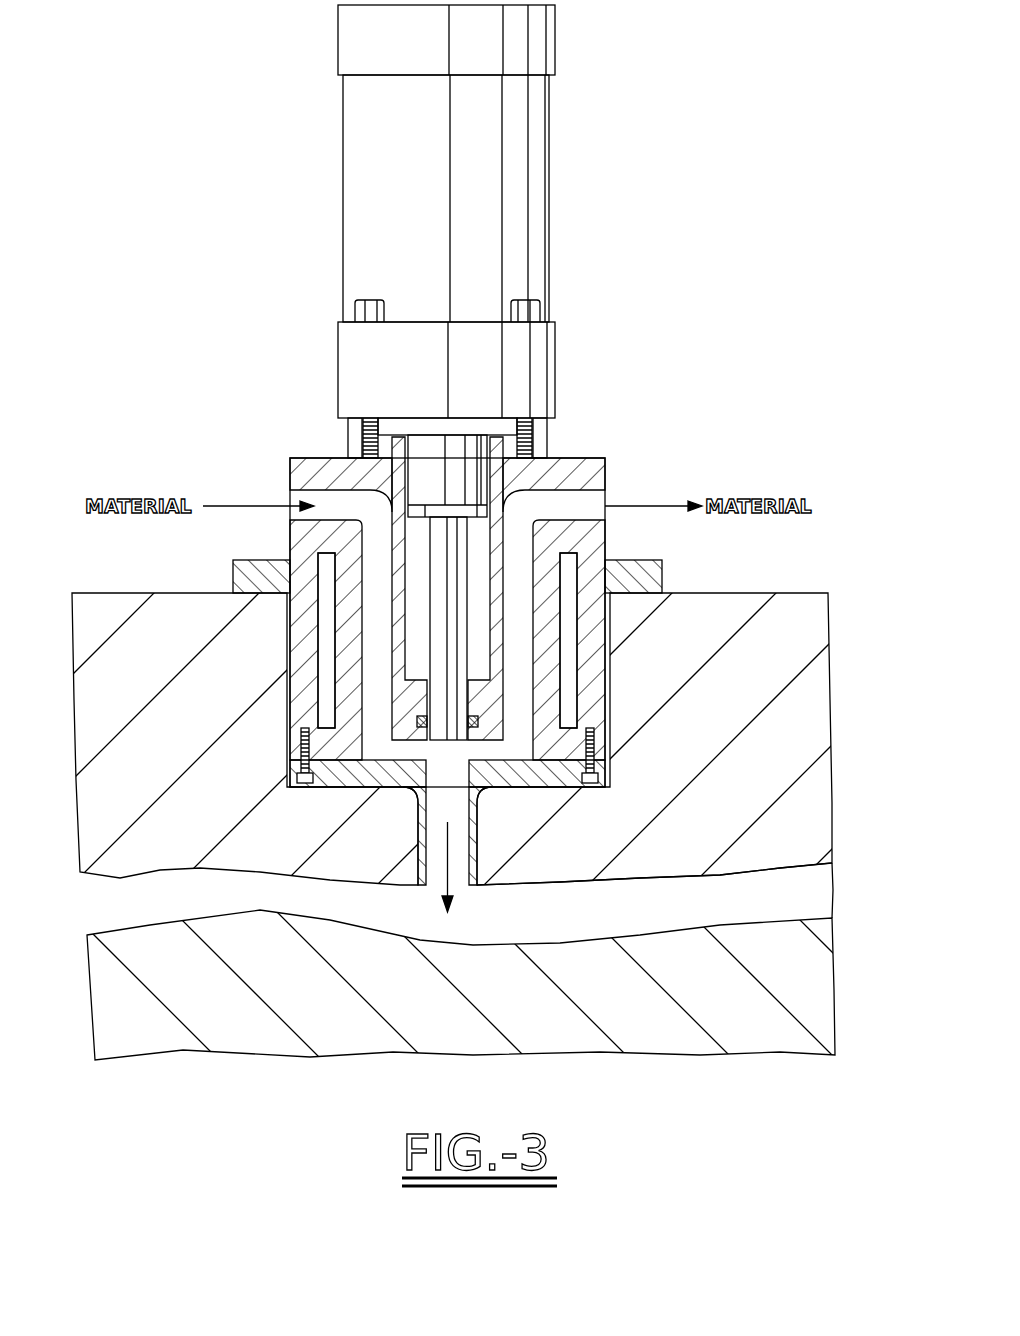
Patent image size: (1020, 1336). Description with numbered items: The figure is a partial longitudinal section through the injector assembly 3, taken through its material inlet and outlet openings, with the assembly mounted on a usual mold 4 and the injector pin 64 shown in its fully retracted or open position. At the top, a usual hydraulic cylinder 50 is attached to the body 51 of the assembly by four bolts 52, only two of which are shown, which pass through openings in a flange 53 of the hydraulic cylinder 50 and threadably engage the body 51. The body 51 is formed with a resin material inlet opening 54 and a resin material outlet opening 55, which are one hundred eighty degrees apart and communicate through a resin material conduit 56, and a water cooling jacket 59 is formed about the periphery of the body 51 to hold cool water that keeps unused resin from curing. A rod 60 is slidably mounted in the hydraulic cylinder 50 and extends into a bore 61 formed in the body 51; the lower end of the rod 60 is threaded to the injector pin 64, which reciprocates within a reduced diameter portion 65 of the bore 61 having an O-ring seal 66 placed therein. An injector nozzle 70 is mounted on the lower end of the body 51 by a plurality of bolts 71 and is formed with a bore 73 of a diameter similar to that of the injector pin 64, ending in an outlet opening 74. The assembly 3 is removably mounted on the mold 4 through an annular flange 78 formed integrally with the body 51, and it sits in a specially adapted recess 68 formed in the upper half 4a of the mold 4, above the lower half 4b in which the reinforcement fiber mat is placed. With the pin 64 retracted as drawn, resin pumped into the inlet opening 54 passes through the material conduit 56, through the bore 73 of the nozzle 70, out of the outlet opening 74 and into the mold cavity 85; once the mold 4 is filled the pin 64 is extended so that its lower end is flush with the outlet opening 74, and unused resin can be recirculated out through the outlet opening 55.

The injector assembly 3 is at (601, 457).
The mold 4 is at (808, 593).
The upper half of mold 4a is at (833, 803).
The lower half of mold 4b is at (833, 948).
The hydraulic cylinder 50 is at (548, 144).
The body 51 is at (568, 457).
The bolts 52 is at (368, 301).
The flange 53 is at (553, 343).
The resin material inlet opening 54 is at (293, 482).
The resin material outlet opening 55 is at (606, 482).
The resin material conduit 56 is at (382, 556).
The water cooling jacket 59 is at (330, 642).
The rod 60 is at (440, 450).
The bore 61 is at (407, 668).
The injector pin 64 is at (452, 563).
The reduced diameter portion 65 is at (475, 718).
The O-ring seal 66 is at (420, 718).
The recess 68 is at (297, 730).
The injector nozzle 70 is at (533, 790).
The bolts 71 is at (303, 792).
The bore 73 is at (425, 822).
The outlet opening 74 is at (462, 880).
The annular flange 78 is at (233, 572).
The mold cavity 85 is at (822, 892).